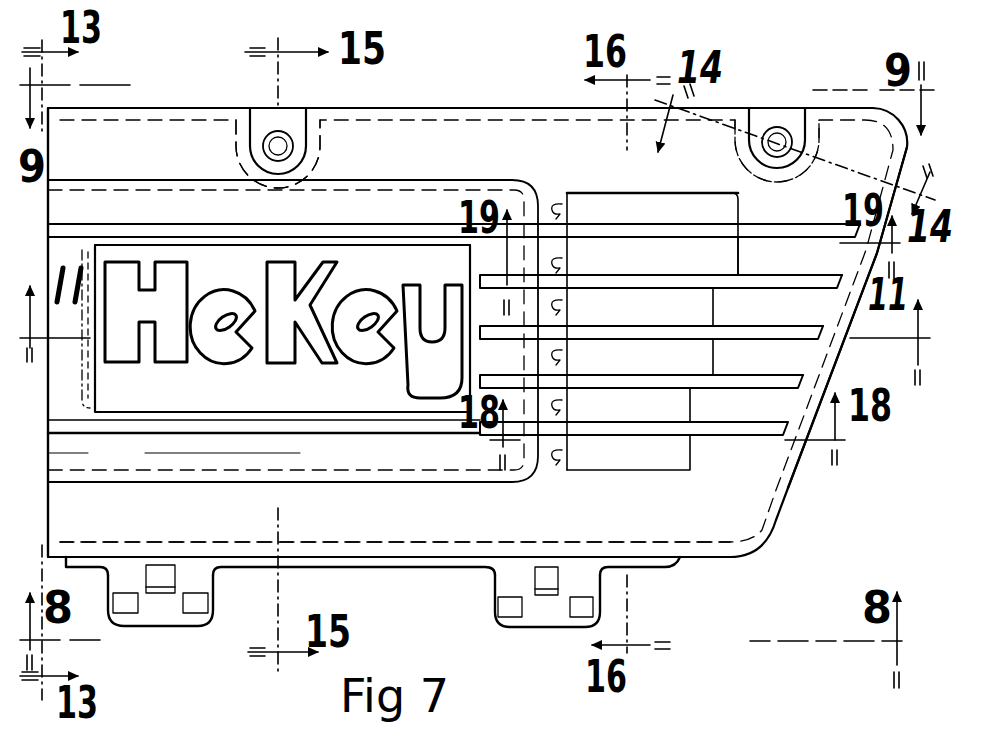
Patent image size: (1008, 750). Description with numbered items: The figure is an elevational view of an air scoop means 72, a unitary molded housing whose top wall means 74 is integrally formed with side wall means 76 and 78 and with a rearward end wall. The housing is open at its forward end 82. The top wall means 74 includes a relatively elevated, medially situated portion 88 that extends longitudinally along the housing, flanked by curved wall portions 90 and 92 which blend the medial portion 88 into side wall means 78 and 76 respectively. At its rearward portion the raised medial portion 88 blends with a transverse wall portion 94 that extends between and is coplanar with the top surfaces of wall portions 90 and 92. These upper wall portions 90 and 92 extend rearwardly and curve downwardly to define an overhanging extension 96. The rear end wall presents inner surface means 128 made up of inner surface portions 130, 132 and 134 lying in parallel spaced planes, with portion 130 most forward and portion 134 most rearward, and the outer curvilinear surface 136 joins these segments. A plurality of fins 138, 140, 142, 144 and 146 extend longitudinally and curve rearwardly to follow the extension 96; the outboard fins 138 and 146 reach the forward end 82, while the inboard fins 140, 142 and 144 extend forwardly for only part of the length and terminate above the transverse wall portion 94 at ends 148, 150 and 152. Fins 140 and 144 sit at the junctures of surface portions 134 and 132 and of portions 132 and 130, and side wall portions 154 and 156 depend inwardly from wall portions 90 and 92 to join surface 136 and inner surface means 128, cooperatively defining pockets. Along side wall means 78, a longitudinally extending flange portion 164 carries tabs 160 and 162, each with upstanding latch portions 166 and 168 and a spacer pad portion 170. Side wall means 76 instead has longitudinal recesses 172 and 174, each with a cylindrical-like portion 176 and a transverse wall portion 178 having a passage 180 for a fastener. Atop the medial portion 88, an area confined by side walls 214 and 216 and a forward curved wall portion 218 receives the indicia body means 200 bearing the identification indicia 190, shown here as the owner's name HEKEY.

The air scoop means 72 is at (457, 78).
The top wall means 74 is at (492, 514).
The side wall means 76 is at (482, 106).
The side wall means 78 is at (413, 570).
The forward end 82 is at (42, 516).
The medial portion 88 is at (176, 451).
The curved wall portion 90 is at (374, 522).
The curved wall portion 92 is at (380, 152).
The transverse wall portion 94 is at (576, 490).
The overhanging extension 96 is at (788, 360).
The inner surface means 128 is at (733, 207).
The inner surface portion 130 is at (690, 403).
The inner surface portion 132 is at (713, 353).
The inner surface portion 134 is at (737, 255).
The outer curvilinear surface 136 is at (606, 206).
The fin 138 is at (340, 222).
The fin 140 is at (772, 284).
The fin 142 is at (773, 330).
The fin 144 is at (773, 384).
The fin 146 is at (268, 428).
The end 148 is at (482, 382).
The end 150 is at (482, 335).
The end 152 is at (482, 283).
The side wall portion 154 is at (607, 462).
The side wall portion 156 is at (630, 198).
The tab 160 is at (163, 630).
The tab 162 is at (548, 628).
The flange portion 164 is at (292, 568).
The latch portion 166 is at (126, 605).
The latch portion 168 is at (198, 604).
The spacer pad portion 170 is at (156, 578).
The recess 172 is at (258, 134).
The recess 174 is at (756, 127).
The cylindrical-like portion 176 is at (314, 150).
The transverse wall portion 178 is at (256, 160).
The passage 180 is at (280, 144).
The identification indicia 190 is at (228, 372).
The identification indicia body means 200 is at (166, 417).
The side wall 214 is at (206, 246).
The side wall 216 is at (382, 405).
The curved wall portion 218 is at (88, 322).